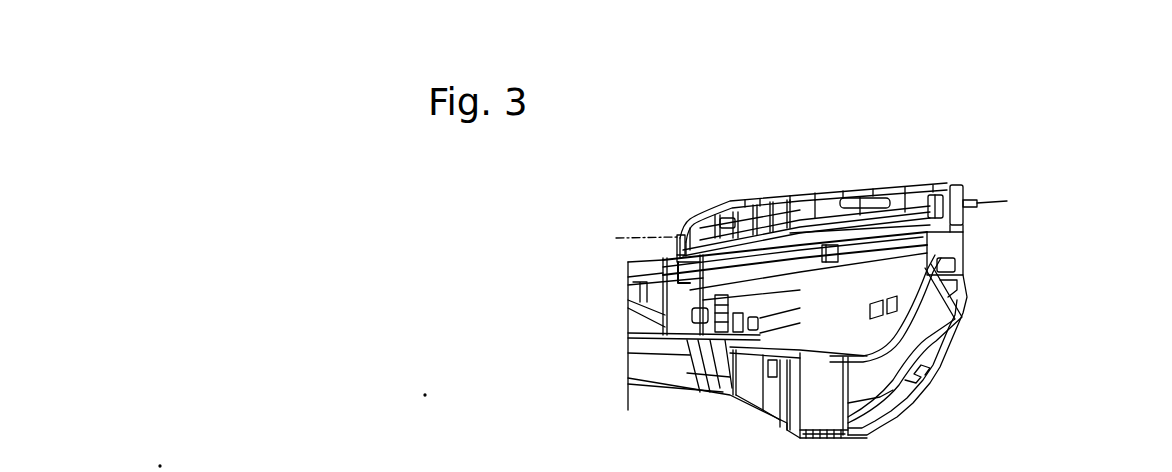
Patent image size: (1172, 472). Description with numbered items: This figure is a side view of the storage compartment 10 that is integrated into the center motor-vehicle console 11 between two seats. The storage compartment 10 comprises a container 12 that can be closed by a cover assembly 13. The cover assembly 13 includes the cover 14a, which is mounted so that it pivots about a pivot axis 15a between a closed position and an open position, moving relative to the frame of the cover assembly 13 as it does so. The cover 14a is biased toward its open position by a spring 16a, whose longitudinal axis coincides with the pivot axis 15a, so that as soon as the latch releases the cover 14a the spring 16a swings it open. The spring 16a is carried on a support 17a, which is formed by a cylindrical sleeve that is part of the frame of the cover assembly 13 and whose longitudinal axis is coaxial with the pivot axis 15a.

The storage compartment 10 is at (675, 209).
The center motor-vehicle console 11 is at (683, 156).
The container 12 is at (892, 287).
The cover assembly 13 is at (727, 188).
The cover 14a is at (820, 197).
The pivot axis 15a is at (614, 236).
The spring 16a is at (973, 189).
The support 17a is at (981, 200).